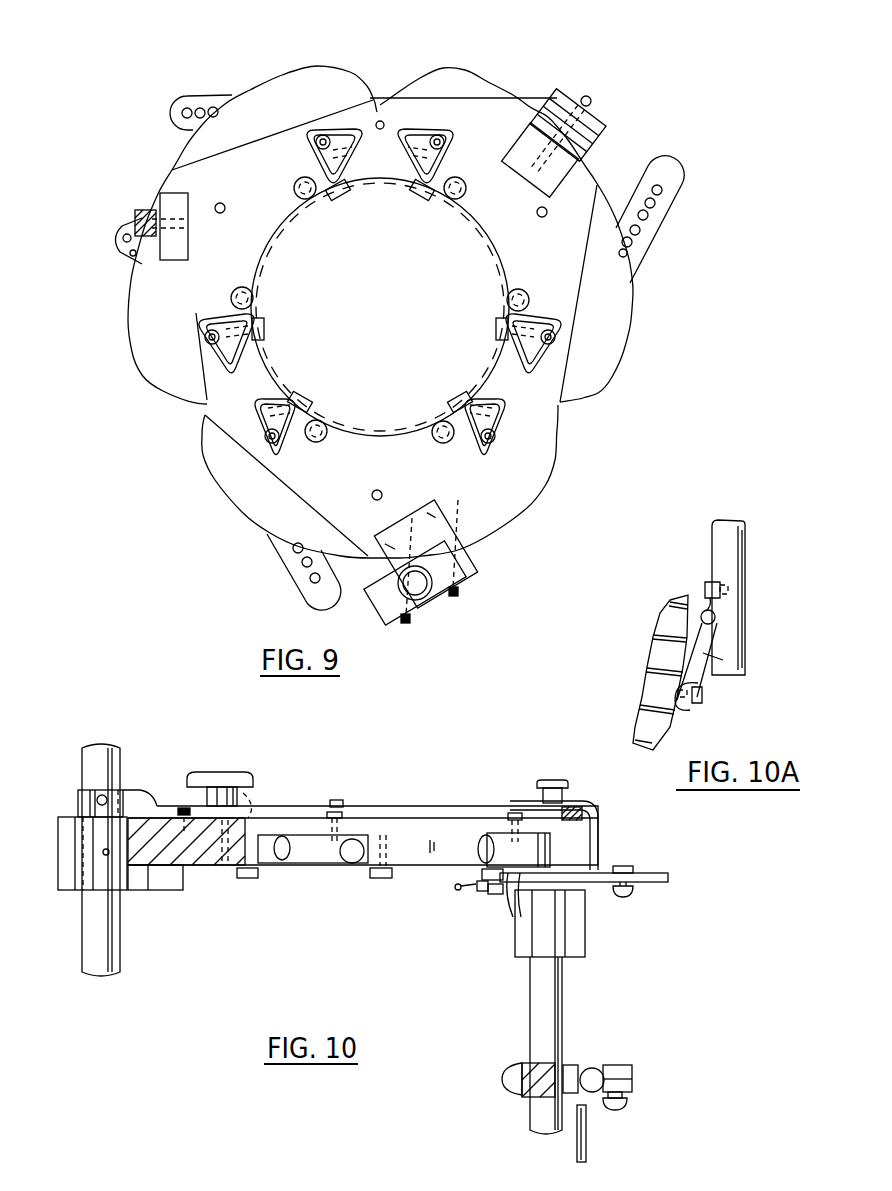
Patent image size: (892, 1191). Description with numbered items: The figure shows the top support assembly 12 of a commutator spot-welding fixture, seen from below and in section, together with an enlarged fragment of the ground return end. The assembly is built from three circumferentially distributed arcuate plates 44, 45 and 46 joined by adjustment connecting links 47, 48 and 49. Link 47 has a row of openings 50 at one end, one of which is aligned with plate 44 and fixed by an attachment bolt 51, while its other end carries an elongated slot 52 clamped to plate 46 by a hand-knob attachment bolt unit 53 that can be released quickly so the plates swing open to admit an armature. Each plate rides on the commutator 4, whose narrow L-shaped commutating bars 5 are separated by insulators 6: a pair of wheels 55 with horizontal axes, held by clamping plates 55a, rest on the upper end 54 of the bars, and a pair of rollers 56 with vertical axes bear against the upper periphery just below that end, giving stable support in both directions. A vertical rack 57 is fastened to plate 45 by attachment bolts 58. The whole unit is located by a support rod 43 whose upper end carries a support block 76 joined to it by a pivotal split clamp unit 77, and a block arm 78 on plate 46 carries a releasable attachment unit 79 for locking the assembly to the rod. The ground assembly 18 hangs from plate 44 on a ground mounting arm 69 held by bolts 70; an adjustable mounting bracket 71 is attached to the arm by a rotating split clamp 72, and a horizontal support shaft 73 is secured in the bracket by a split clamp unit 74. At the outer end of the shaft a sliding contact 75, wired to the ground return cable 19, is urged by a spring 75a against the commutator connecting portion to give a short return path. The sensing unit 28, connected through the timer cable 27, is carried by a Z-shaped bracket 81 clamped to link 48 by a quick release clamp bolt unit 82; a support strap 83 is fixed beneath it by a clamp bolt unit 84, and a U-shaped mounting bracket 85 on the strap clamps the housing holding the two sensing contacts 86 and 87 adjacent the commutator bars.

In FIG. 10A, the commutator 4 is at (663, 588).
In FIG. 10A, the commutating bars 5 is at (653, 645).
In FIG. 10A, the insulators 6 is at (642, 700).
In FIG. 9, the top support assembly 12 is at (516, 80).
In FIG. 10, the top support assembly 12 is at (452, 758).
In FIG. 10, the ground assembly 18 is at (518, 1112).
In FIG. 10, the ground return cable 19 is at (588, 1150).
In FIG. 10, the timer cable 27 is at (515, 920).
In FIG. 10, the sensing unit 28 is at (455, 888).
In FIG. 9, the support rod 43 is at (432, 598).
In FIG. 10, the support rod 43 is at (116, 774).
In FIG. 9, the arcuate plate 44 is at (628, 320).
In FIG. 10, the arcuate plate 44 is at (412, 826).
In FIG. 9, the arcuate plate 45 is at (178, 172).
In FIG. 9, the support plate 46 is at (538, 495).
In FIG. 10, the support plate 46 is at (212, 867).
In FIG. 9, the connecting link 47 is at (642, 268).
In FIG. 10, the connecting link 47 is at (376, 805).
In FIG. 9, the connecting link 48 is at (382, 118).
In FIG. 10, the connecting link 48 is at (578, 806).
In FIG. 9, the connecting link 49 is at (202, 410).
In FIG. 9, the openings 50 is at (650, 210).
In FIG. 10, the attachment bolt 51 is at (337, 798).
In FIG. 10, the elongated slot 52 is at (250, 806).
In FIG. 10, the attachment bolt unit 53 is at (222, 774).
In FIG. 9, the upper end 54 is at (380, 432).
In FIG. 9, the wheels 55 is at (350, 194).
In FIG. 10, the wheels 55 is at (348, 860).
In FIG. 9, the clamping plates 55a is at (418, 140).
In FIG. 9, the rollers 56 is at (311, 200).
In FIG. 10, the rollers 56 is at (250, 878).
In FIG. 9, the vertical rack 57 is at (158, 208).
In FIG. 9, the attachment bolts 58 is at (133, 221).
In FIG. 9, the ground mounting arm 69 is at (608, 118).
In FIG. 10, the ground mounting arm 69 is at (560, 987).
In FIG. 9, the bolts 70 is at (590, 97).
In FIG. 10, the adjustable mounting bracket 71 is at (622, 1066).
In FIG. 10, the rotating split clamp 72 is at (530, 1065).
In FIG. 10A, the horizontal support shaft 73 is at (746, 575).
In FIG. 10, the horizontal support shaft 73 is at (597, 1068).
In FIG. 10, the split clamp unit 74 is at (628, 1101).
In FIG. 10A, the sliding contact 75 is at (687, 713).
In FIG. 10, the sliding contact 75 is at (572, 1066).
In FIG. 10A, the spring 75a is at (710, 670).
In FIG. 9, the support block 76 is at (450, 525).
In FIG. 10, the support block 76 is at (140, 890).
In FIG. 9, the split clamp unit 77 is at (383, 608).
In FIG. 10, the split clamp unit 77 is at (60, 847).
In FIG. 10, the block arm 78 is at (143, 800).
In FIG. 10, the releasable attachment unit 79 is at (80, 811).
In FIG. 10, the Z-shaped bracket 81 is at (598, 803).
In FIG. 10, the quick release clamp bolt unit 82 is at (552, 780).
In FIG. 10, the support strap 83 is at (655, 873).
In FIG. 10, the clamp bolt unit 84 is at (626, 898).
In FIG. 10, the U-shaped mounting bracket 85 is at (492, 896).
In FIG. 10, the sensing contact 86 is at (485, 874).
In FIG. 10, the sensing contact 87 is at (480, 892).